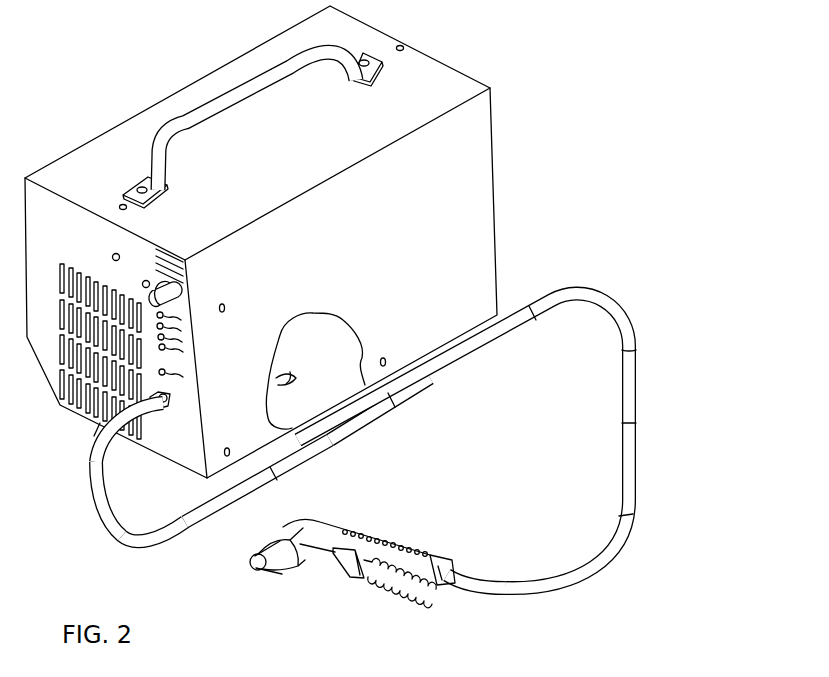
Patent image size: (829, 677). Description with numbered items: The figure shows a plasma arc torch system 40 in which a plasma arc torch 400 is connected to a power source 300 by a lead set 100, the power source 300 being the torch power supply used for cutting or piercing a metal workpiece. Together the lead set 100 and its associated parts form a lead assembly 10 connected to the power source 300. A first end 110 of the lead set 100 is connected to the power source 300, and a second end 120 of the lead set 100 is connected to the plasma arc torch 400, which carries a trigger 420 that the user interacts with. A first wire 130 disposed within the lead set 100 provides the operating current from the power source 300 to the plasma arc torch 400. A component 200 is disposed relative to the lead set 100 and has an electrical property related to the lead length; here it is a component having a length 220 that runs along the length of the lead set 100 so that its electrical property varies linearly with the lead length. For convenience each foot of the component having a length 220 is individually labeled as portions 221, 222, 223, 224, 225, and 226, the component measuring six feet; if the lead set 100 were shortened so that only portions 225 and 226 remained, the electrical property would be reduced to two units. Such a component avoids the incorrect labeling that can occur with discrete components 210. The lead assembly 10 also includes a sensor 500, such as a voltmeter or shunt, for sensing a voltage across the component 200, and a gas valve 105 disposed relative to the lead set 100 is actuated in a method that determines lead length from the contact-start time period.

The lead assembly 10 is at (617, 281).
The plasma arc torch system 40 is at (524, 57).
The lead set 100 is at (633, 330).
The gas valve 105 is at (289, 371).
The first end 110 is at (190, 413).
The second end 120 is at (445, 590).
The first wire 130 is at (112, 528).
The component 200 is at (93, 430).
The discrete component 210 is at (458, 553).
The component having a length 220 is at (90, 460).
The individually labeled portion 221 is at (91, 487).
The individually labeled portion 222 is at (308, 448).
The individually labeled portion 223 is at (425, 378).
The individually labeled portion 224 is at (539, 313).
The individually labeled portion 225 is at (637, 380).
The individually labeled portion 226 is at (620, 547).
The power source 300 is at (484, 262).
The plasma arc torch 400 is at (377, 582).
The trigger 420 is at (338, 565).
The sensor 500 is at (540, 588).